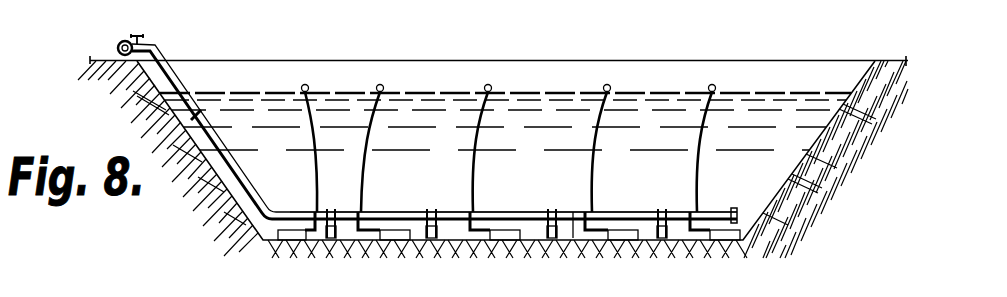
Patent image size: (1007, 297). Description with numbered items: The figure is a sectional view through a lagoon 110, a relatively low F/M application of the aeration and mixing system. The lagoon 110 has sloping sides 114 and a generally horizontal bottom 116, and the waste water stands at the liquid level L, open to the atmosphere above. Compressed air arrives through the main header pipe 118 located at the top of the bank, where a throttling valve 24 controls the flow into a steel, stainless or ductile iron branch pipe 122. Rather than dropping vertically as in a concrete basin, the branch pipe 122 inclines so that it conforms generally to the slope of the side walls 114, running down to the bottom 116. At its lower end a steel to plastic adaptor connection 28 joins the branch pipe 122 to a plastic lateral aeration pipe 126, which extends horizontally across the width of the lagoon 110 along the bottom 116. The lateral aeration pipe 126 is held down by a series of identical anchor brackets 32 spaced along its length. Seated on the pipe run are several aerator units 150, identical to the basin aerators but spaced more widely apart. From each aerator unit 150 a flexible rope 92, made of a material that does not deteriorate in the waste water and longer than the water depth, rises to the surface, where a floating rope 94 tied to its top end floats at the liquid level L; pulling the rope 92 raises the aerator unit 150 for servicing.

The lagoon 110 is at (493, 149).
The sloping sides 114 is at (236, 178).
The liquid level L is at (443, 92).
The branch pipes 122 is at (405, 115).
The main header pipe 118 is at (119, 42).
The throttling valve 24 is at (141, 35).
The steel to plastic adaptor connection 28 is at (203, 110).
The lateral aeration pipes 126 is at (393, 212).
The flexible rope 92 is at (364, 171).
The floating rope 94 is at (379, 85).
The aerator units 150 is at (291, 240).
The anchor brackets 32 is at (335, 241).
The bottom 116 is at (573, 212).